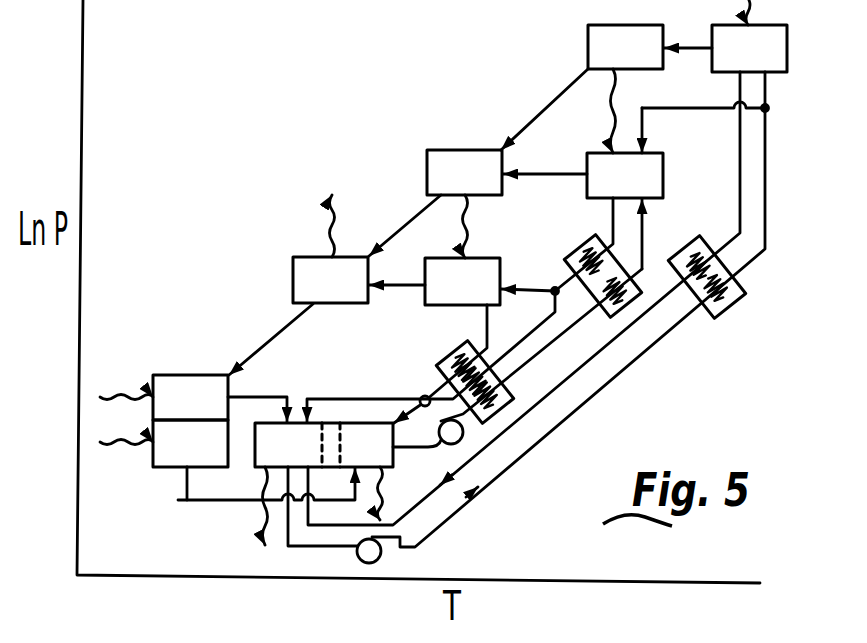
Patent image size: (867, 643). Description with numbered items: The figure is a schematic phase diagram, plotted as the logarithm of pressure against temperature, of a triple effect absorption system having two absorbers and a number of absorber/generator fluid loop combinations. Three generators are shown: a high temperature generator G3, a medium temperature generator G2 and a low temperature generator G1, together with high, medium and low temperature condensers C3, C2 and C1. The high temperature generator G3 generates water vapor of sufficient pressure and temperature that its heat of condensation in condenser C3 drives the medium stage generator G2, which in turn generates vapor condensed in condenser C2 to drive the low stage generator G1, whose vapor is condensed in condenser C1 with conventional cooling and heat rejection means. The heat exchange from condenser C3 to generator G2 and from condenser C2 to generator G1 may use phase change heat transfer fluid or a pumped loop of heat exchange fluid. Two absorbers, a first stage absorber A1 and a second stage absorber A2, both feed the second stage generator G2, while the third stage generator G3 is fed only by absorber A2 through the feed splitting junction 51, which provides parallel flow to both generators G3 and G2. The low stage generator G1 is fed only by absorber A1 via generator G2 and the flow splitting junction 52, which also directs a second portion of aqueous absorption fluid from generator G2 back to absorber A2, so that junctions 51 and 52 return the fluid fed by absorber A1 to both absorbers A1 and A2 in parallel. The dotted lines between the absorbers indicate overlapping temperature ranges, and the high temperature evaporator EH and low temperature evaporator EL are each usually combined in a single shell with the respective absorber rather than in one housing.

The feed splitting junction 51 is at (767, 107).
The flow splitting junction 52 is at (553, 289).
The low temperature condenser C1 is at (330, 280).
The medium temperature condenser C2 is at (464, 173).
The high temperature condenser C3 is at (625, 47).
The low temperature generator G1 is at (462, 281).
The medium temperature generator G2 is at (625, 176).
The high temperature generator G3 is at (749, 48).
The high temperature evaporator EH is at (190, 397).
The low temperature evaporator EL is at (190, 443).
The first stage absorber A1 is at (357, 446).
The second stage absorber A2 is at (288, 446).